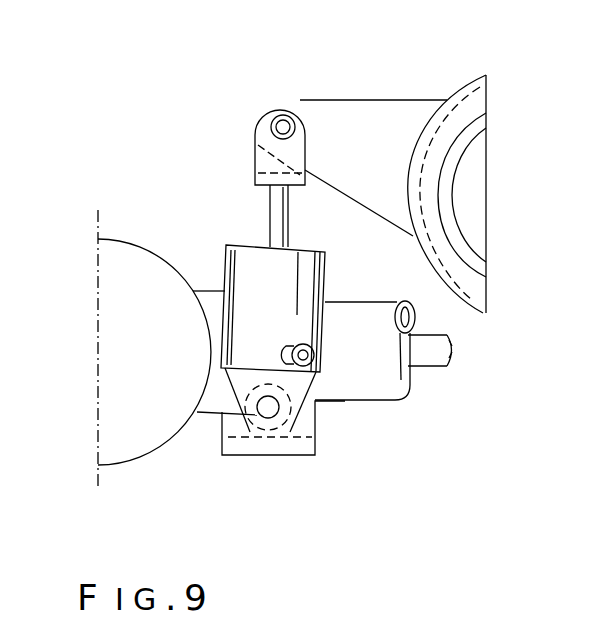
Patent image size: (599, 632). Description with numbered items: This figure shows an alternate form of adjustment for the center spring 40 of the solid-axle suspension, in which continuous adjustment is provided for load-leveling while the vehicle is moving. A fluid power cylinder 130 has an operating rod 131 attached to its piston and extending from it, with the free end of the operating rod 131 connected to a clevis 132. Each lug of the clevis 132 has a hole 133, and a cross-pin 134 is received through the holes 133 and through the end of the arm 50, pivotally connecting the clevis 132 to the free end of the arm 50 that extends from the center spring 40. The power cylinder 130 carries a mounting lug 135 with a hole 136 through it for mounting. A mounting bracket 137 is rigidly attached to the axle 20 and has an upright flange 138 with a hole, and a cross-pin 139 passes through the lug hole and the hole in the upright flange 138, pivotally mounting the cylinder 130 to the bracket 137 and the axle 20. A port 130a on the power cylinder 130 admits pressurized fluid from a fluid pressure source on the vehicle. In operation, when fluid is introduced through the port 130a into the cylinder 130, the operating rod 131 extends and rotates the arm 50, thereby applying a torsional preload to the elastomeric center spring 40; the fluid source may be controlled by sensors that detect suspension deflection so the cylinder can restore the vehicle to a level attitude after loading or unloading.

The axle 20 is at (340, 313).
The center spring 40 is at (463, 65).
The arm 50 is at (396, 110).
The fluid power cylinder 130 is at (238, 272).
The port 130a is at (313, 356).
The operating rod 131 is at (275, 208).
The clevis 132 is at (256, 152).
The hole 133 is at (271, 126).
The cross-pin 134 is at (283, 118).
The mounting lug 135 is at (237, 378).
The hole 136 is at (257, 403).
The mounting bracket 137 is at (268, 447).
The upright flange 138 is at (240, 428).
The cross-pin 139 is at (280, 404).